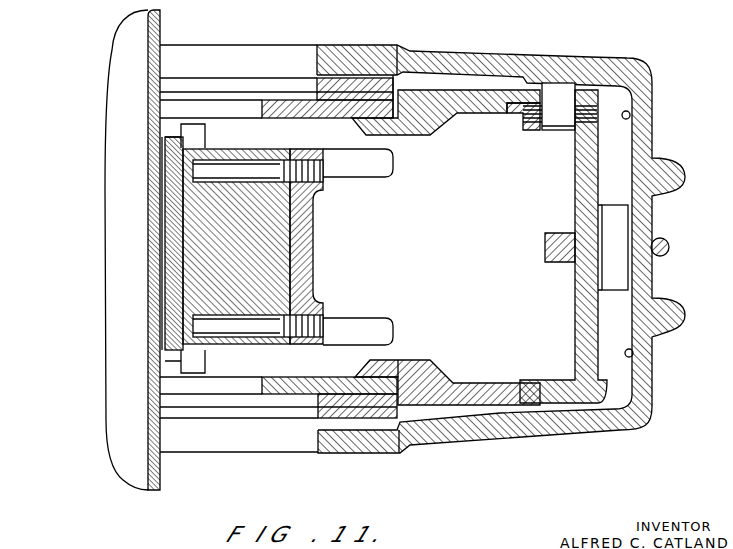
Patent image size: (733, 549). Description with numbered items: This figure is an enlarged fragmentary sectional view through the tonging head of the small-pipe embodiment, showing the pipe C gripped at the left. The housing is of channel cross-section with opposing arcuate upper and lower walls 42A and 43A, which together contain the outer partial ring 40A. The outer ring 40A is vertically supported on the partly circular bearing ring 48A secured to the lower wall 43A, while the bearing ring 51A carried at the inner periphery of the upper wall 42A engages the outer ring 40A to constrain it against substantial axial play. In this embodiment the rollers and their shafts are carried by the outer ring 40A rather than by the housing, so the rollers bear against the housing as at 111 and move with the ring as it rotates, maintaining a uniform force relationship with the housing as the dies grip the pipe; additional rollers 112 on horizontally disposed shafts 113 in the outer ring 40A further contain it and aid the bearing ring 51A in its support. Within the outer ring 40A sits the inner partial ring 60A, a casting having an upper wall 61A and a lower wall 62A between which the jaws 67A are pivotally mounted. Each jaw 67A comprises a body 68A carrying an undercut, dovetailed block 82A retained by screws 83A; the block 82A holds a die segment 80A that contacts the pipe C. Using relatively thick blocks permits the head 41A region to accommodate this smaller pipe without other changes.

The pipe C is at (160, 23).
The upper wall 42A is at (441, 52).
The lower wall 43A is at (455, 438).
The bearing ring 51A is at (316, 92).
The bearing ring 48A is at (326, 410).
The inner partial ring 60A is at (266, 96).
The upper wall 61A is at (278, 119).
The lower wall 62A is at (282, 369).
The shafts 113 is at (532, 110).
The rollers 112 is at (555, 132).
The outer partial ring 40A is at (599, 158).
The plunger head 41A is at (623, 275).
The bearing point 111 is at (630, 115).
The jaws 67A is at (160, 192).
The die segment 80A is at (167, 248).
The block 82A is at (197, 277).
The screws 83A is at (172, 141).
The body 68A is at (346, 179).